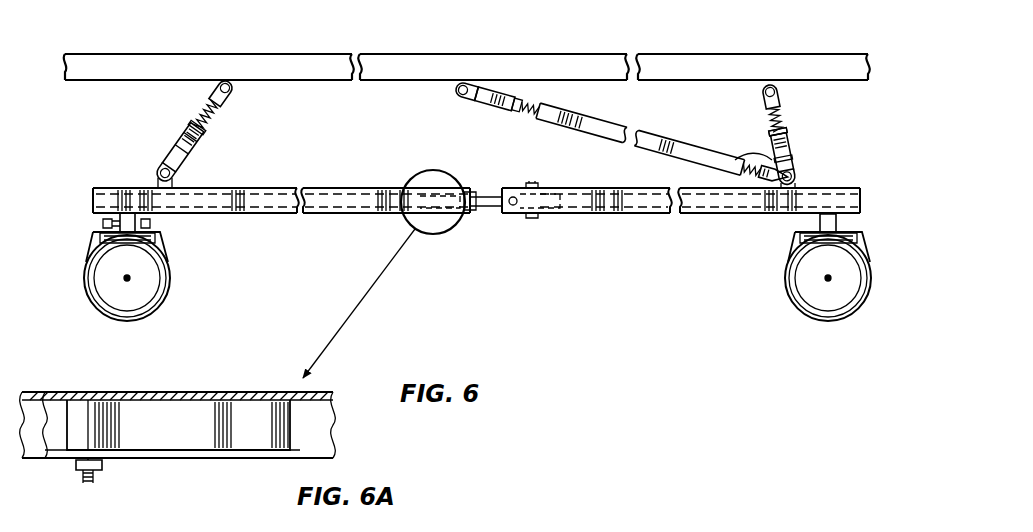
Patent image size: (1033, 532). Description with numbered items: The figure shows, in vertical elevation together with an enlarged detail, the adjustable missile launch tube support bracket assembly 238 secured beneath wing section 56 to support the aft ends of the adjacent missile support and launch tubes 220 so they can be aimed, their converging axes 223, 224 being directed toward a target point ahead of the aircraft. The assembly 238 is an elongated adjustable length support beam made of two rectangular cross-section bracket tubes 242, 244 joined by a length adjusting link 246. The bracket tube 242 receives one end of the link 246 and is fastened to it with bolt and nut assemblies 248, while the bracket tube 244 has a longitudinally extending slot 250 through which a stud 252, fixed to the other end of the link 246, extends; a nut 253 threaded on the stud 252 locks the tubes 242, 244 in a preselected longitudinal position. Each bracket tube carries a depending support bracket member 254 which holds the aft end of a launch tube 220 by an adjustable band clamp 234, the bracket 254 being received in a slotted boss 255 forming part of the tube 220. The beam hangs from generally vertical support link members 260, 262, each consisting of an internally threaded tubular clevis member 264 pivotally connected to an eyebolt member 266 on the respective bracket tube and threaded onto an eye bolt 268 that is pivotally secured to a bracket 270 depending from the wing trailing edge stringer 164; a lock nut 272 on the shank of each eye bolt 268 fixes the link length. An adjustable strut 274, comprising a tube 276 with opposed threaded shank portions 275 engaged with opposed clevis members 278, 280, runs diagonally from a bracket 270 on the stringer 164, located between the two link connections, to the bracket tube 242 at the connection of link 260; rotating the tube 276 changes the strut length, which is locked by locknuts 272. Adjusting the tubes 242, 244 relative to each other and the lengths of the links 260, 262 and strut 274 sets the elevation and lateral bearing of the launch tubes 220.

In FIG. 6, the wing section 56 is at (434, 50).
In FIG. 6, the wing trailing edge stringer 164 is at (690, 57).
In FIG. 6, the missile support and launch tube 220 is at (140, 317).
In FIG. 6, the converging axis 223 is at (806, 310).
In FIG. 6, the converging axis 224 is at (126, 279).
In FIG. 6, the adjustable band clamp 234 is at (162, 242).
In FIG. 6, the adjustable missile launch tube support bracket assembly 238 is at (588, 216).
In FIG. 6, the bracket tube 242 is at (570, 188).
In FIG. 6, the bracket tube 244 is at (385, 188).
In FIG. 6A, the bracket tube 244 is at (146, 392).
In FIG. 6, the length adjusting link 246 is at (490, 207).
In FIG. 6A, the length adjusting link 246 is at (270, 432).
In FIG. 6, the bolt and nut assembly 248 is at (532, 184).
In FIG. 6A, the longitudinally extending slot 250 is at (268, 452).
In FIG. 6A, the stud 252 is at (96, 480).
In FIG. 6A, the nut 253 is at (76, 470).
In FIG. 6, the depending support bracket member 254 is at (130, 244).
In FIG. 6, the slotted boss 255 is at (100, 238).
In FIG. 6, the support link member 260 is at (790, 148).
In FIG. 6, the support link member 262 is at (196, 150).
In FIG. 6, the internally threaded tubular clevis member 264 is at (172, 160).
In FIG. 6, the eyebolt member 266 is at (156, 180).
In FIG. 6, the eye bolt 268 is at (219, 108).
In FIG. 6, the bracket 270 is at (234, 91).
In FIG. 6, the lock nut 272 is at (200, 128).
In FIG. 6, the adjustable strut 274 is at (584, 122).
In FIG. 6, the threaded shank portion 275 is at (532, 112).
In FIG. 6, the tube 276 is at (658, 136).
In FIG. 6, the clevis member 278 is at (492, 104).
In FIG. 6, the clevis member 280 is at (742, 178).